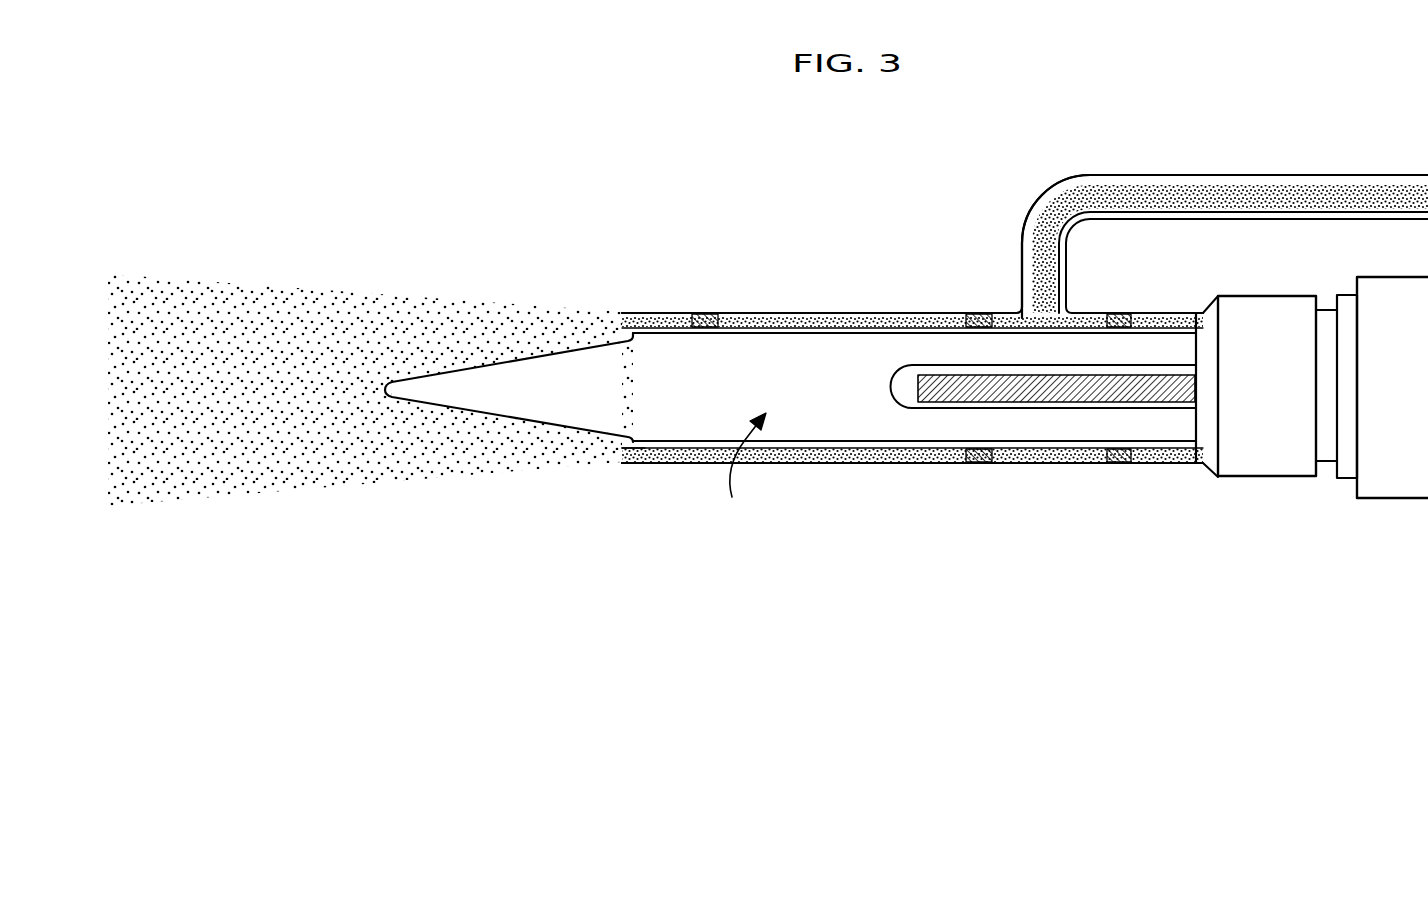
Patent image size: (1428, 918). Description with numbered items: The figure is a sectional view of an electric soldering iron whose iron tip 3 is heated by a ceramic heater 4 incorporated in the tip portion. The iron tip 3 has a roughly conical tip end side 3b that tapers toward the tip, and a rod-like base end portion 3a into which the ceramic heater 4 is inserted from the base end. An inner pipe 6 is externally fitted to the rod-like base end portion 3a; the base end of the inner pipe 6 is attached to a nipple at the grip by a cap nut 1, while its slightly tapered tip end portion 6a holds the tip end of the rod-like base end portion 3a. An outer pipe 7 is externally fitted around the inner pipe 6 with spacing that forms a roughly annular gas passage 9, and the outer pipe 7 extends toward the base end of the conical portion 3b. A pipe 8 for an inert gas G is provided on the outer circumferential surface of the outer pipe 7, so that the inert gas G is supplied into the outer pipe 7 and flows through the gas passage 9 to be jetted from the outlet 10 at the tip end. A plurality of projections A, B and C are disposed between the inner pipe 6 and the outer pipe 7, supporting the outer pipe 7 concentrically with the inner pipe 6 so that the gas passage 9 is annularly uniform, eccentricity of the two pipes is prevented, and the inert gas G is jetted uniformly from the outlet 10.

The cap nut 1 is at (1272, 460).
The iron tip 3 is at (748, 467).
The rod-like base end portion 3a is at (837, 422).
The conical tip end side 3b is at (540, 383).
The ceramic heater 4 is at (1030, 403).
The inner pipe 6 is at (781, 315).
The tip end portion of the inner pipe 6a is at (618, 318).
The outer pipe 7 is at (950, 313).
The pipe for inert gas 8 is at (1220, 184).
The gas passage 9 is at (863, 315).
The outlet 10 is at (627, 453).
The projection A is at (1111, 313).
The projection B is at (969, 313).
The projection C is at (703, 315).
The inert gas G is at (310, 427).